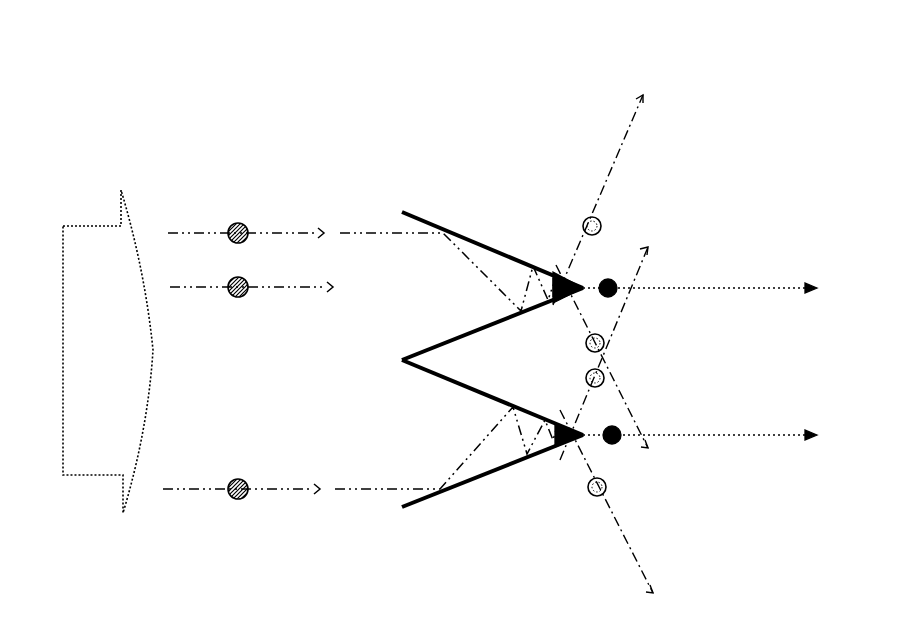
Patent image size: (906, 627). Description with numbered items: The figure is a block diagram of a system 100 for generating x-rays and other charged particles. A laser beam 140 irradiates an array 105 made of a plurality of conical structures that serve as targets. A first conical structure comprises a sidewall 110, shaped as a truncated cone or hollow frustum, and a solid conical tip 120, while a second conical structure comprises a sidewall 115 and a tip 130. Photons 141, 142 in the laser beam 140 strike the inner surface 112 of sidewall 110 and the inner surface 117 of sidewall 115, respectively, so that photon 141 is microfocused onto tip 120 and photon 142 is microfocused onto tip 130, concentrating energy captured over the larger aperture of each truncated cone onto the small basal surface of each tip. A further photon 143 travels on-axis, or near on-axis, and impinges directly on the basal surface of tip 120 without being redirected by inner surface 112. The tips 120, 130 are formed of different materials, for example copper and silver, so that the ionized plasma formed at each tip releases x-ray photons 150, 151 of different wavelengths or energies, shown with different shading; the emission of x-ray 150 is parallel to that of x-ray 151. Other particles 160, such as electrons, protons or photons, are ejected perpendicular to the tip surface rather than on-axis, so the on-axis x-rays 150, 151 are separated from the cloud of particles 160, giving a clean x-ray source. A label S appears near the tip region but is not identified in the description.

The system 100 is at (136, 75).
The array 105 is at (409, 194).
The sidewall 110 is at (428, 222).
The inner surface 112 is at (480, 322).
The sidewall 115 is at (455, 487).
The inner surface 117 is at (485, 405).
The tip 120 is at (576, 285).
The tip 130 is at (567, 446).
The laser beam 140 is at (108, 351).
The photon 141 is at (231, 225).
The photon 142 is at (232, 497).
The photon 143 is at (244, 295).
The x-ray photon 150 is at (614, 295).
The x-ray photon 151 is at (618, 442).
The other particles 160 is at (586, 217).
The slit S is at (555, 300).